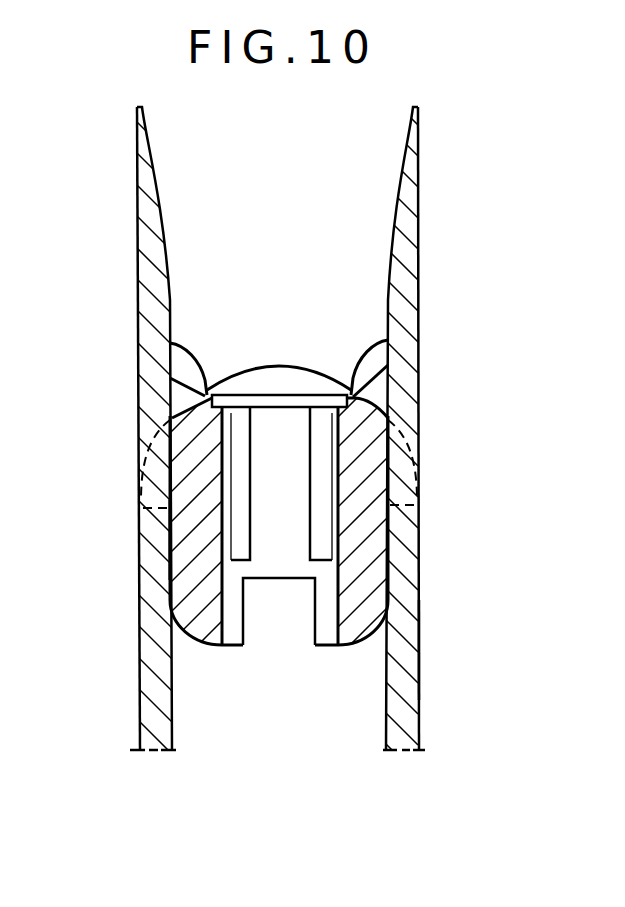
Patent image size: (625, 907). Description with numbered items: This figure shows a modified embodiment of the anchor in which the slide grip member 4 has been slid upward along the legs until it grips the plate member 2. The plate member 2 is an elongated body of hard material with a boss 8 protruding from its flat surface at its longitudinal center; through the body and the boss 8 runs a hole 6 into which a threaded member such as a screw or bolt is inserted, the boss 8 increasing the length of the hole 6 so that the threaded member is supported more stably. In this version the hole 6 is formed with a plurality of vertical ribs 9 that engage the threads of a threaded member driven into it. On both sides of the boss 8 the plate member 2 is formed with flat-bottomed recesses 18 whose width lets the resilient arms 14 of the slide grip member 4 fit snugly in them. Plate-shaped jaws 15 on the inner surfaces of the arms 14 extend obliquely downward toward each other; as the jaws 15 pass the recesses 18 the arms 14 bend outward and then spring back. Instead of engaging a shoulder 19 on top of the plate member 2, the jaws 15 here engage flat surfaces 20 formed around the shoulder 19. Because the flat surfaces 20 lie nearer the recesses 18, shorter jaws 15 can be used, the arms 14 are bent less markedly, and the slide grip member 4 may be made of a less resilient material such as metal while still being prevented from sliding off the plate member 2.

The resilient arms 14 is at (150, 206).
The jaws 15 is at (175, 350).
The plate member 2 is at (190, 462).
The boss 8 is at (375, 545).
The flat surfaces 20 is at (216, 392).
The shoulder 19 is at (327, 383).
The hole 6 is at (286, 547).
The vertical ribs 9 is at (318, 478).
The recess 18 is at (168, 537).
The slide grip member 4 is at (425, 652).